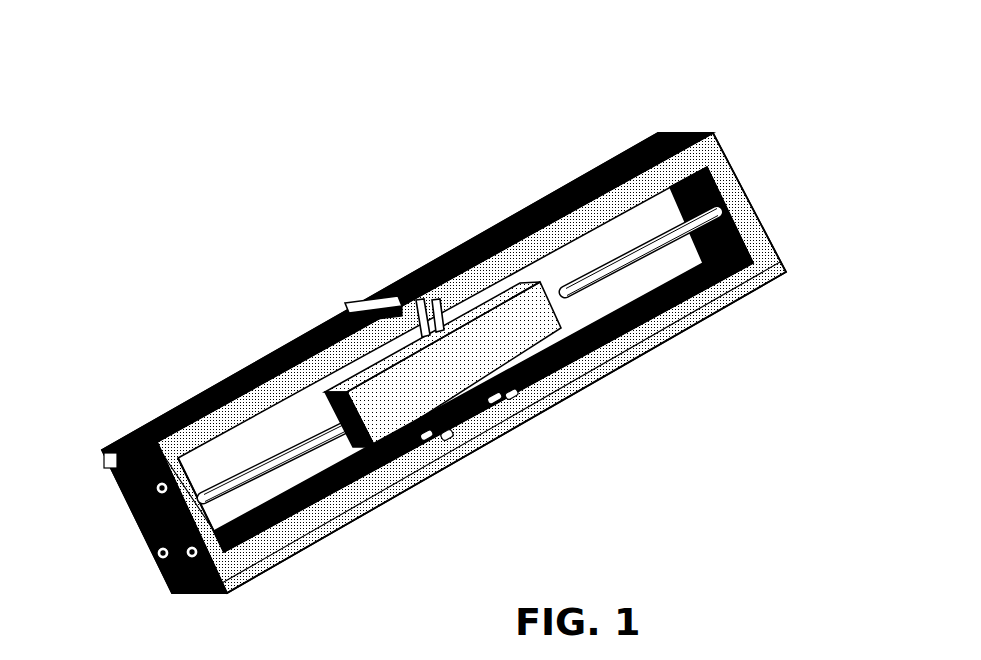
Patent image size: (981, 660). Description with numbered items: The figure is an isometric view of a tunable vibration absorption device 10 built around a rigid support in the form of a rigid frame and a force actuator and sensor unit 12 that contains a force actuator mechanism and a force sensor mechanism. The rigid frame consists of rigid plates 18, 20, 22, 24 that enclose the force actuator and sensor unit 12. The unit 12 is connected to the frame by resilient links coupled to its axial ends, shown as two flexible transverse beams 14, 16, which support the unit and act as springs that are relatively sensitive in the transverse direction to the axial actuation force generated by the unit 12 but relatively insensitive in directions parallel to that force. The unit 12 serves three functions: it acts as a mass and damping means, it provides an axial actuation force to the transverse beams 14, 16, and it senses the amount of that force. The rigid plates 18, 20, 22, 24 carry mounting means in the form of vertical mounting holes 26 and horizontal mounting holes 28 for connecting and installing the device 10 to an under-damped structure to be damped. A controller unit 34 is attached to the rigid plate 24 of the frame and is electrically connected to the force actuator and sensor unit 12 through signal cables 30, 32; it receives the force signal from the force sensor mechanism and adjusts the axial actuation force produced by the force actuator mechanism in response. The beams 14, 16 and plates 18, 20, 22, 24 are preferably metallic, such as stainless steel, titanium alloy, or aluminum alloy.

The tunable vibration absorption device 10 is at (237, 212).
The force actuator and sensor unit 12 is at (500, 330).
The flexible transverse beam 14 is at (293, 445).
The flexible transverse beam 16 is at (597, 285).
The rigid plate 18 is at (183, 483).
The rigid plate 20 is at (735, 195).
The rigid plate 22 is at (655, 338).
The rigid plate 24 is at (238, 384).
The vertical mounting holes 26 is at (130, 493).
The horizontal mounting holes 28 is at (443, 435).
The signal cable 30 is at (412, 312).
The signal cable 32 is at (417, 298).
The controller unit 34 is at (360, 294).